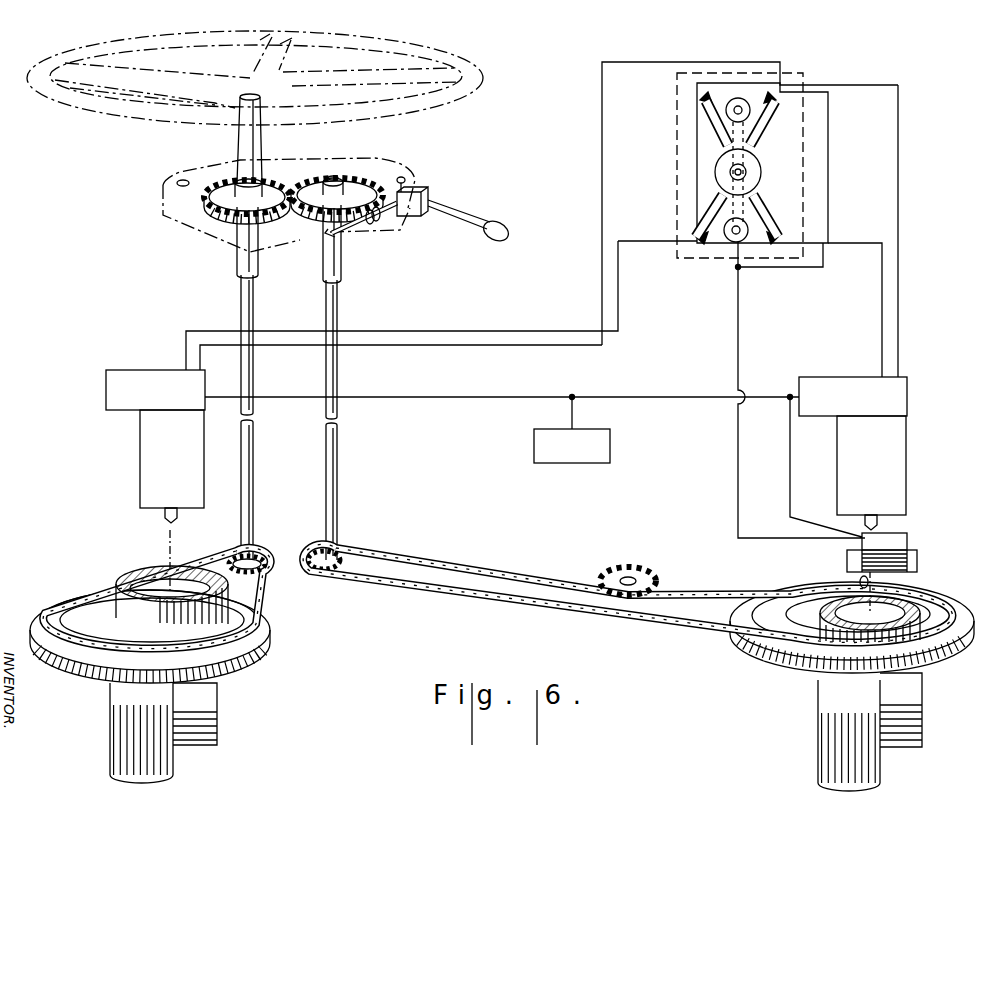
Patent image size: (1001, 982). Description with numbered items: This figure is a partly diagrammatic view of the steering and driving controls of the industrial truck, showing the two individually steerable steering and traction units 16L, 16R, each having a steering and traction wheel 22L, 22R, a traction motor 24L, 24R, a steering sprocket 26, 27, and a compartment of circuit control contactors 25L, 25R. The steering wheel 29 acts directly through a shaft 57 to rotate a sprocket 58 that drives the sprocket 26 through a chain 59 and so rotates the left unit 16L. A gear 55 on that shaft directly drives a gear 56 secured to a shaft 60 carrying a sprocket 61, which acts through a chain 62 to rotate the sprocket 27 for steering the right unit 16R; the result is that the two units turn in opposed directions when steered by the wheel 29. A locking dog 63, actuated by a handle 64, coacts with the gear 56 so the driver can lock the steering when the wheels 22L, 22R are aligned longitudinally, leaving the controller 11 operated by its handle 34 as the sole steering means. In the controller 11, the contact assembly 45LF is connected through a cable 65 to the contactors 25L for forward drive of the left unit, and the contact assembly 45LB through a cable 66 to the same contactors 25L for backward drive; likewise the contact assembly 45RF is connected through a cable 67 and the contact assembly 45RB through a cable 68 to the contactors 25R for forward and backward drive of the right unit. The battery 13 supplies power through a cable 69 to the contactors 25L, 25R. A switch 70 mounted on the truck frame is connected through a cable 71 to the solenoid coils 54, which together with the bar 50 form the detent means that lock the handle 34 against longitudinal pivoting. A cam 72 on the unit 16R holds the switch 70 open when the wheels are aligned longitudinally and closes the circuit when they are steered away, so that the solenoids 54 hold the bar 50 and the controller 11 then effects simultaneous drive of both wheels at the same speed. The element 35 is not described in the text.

The controller 11 is at (800, 78).
The battery 13 is at (553, 466).
The left hand steering and traction unit 16L is at (125, 481).
The right hand steering and traction unit 16R is at (885, 453).
The left steering and traction wheel 22L is at (113, 776).
The right steering and traction wheel 22R is at (825, 763).
The left traction motor 24L is at (140, 473).
The right traction motor 24R is at (906, 480).
The left contactors 25L is at (106, 388).
The right contactors 25R is at (907, 388).
The left steering sprocket 26 is at (252, 614).
The right steering sprocket 27 is at (765, 590).
The steering wheel 29 is at (58, 104).
The handle 34 is at (728, 170).
The switch shaft 35 is at (748, 176).
The right forward contact assembly 45RF is at (705, 122).
The left forward contact assembly 45LF is at (780, 120).
The left backward contact assembly 45LB is at (700, 218).
The right backward contact assembly 45RB is at (770, 212).
The bar 50 is at (760, 143).
The solenoids 54 is at (727, 99).
The gear 55 is at (225, 188).
The gear 56 is at (372, 184).
The shaft 57 is at (243, 263).
The sprocket 58 is at (262, 552).
The chain 59 is at (268, 598).
The shaft 60 is at (339, 309).
The sprocket 61 is at (346, 568).
The chain 62 is at (456, 568).
The locking dog 63 is at (366, 220).
The handle 64 is at (494, 222).
The cable 65 is at (600, 300).
The cable 66 is at (506, 346).
The cable 67 is at (898, 283).
The cable 68 is at (882, 322).
The cable 69 is at (440, 400).
The switch 70 is at (917, 562).
The cable 71 is at (736, 505).
The cam 72 is at (835, 585).